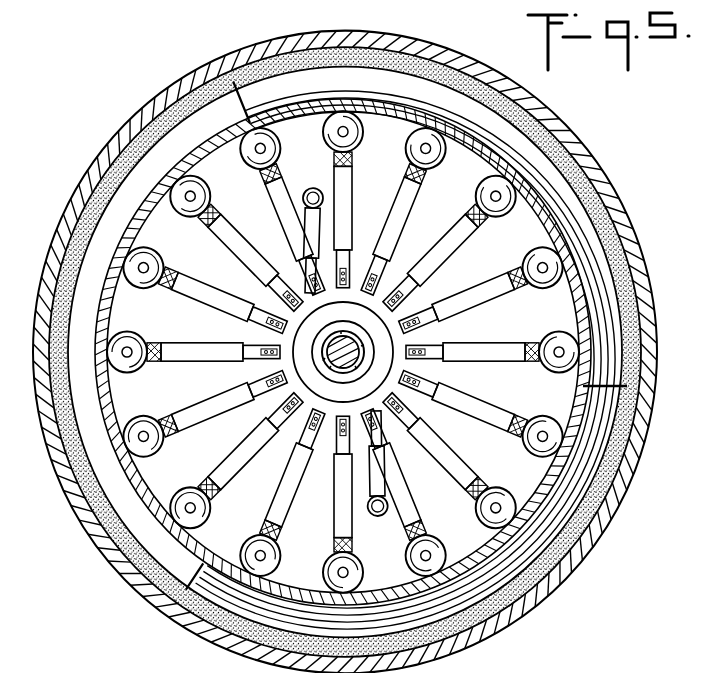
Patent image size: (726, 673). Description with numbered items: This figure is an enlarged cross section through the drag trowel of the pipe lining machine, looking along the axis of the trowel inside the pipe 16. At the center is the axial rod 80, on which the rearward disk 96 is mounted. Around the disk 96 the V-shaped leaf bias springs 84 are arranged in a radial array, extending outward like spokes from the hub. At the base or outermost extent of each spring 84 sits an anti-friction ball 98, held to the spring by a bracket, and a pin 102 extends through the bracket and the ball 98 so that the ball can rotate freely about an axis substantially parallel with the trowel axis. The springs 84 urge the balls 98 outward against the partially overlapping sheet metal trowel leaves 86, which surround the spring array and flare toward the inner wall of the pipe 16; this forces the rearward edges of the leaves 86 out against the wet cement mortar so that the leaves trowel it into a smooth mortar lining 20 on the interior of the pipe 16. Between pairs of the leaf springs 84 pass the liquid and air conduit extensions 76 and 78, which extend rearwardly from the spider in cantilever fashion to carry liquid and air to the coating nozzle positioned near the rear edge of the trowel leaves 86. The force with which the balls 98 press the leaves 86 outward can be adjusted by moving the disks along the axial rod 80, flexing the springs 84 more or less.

The pipe 16 is at (177, 84).
The mortar lining 20 is at (253, 63).
The trowel leaves 86 is at (152, 156).
The rearward disk 96 is at (262, 295).
The leaf bias springs 84 is at (211, 300).
The anti-friction ball 98 is at (408, 153).
The pin 102 is at (195, 199).
The axial rod 80 is at (345, 372).
The air conduit extension 78 is at (316, 190).
The liquid conduit extension 76 is at (379, 516).